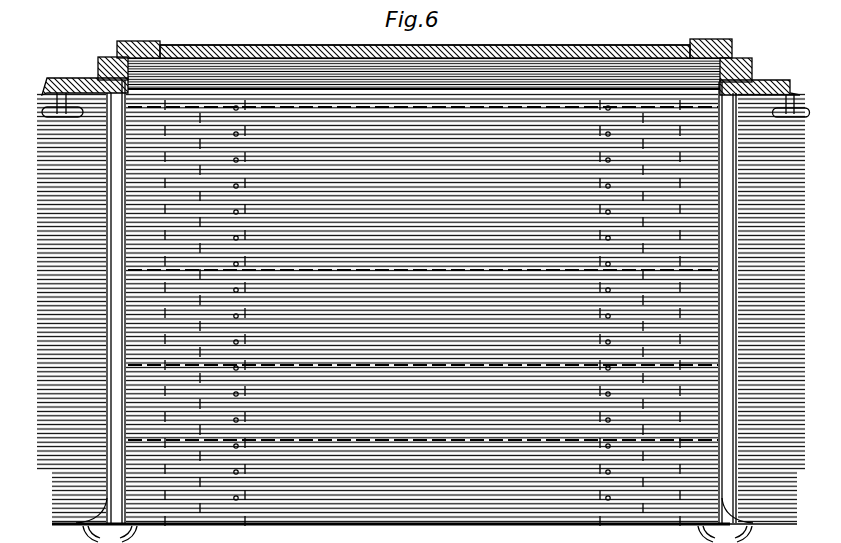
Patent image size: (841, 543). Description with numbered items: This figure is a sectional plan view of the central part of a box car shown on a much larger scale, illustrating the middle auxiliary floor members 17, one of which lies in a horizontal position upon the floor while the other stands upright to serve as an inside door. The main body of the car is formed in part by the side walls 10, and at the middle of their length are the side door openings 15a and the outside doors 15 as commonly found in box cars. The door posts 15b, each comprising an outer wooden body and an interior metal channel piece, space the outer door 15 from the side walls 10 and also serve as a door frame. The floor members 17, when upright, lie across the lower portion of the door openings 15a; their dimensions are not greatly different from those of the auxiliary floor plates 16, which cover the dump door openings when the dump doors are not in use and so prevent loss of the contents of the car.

The side walls 10 is at (57, 78).
The outside doors 15 is at (641, 46).
The side door openings 15a is at (537, 38).
The door posts 15b is at (753, 66).
The auxiliary floor members 16 is at (421, 308).
The auxiliary floor members 17 is at (424, 300).